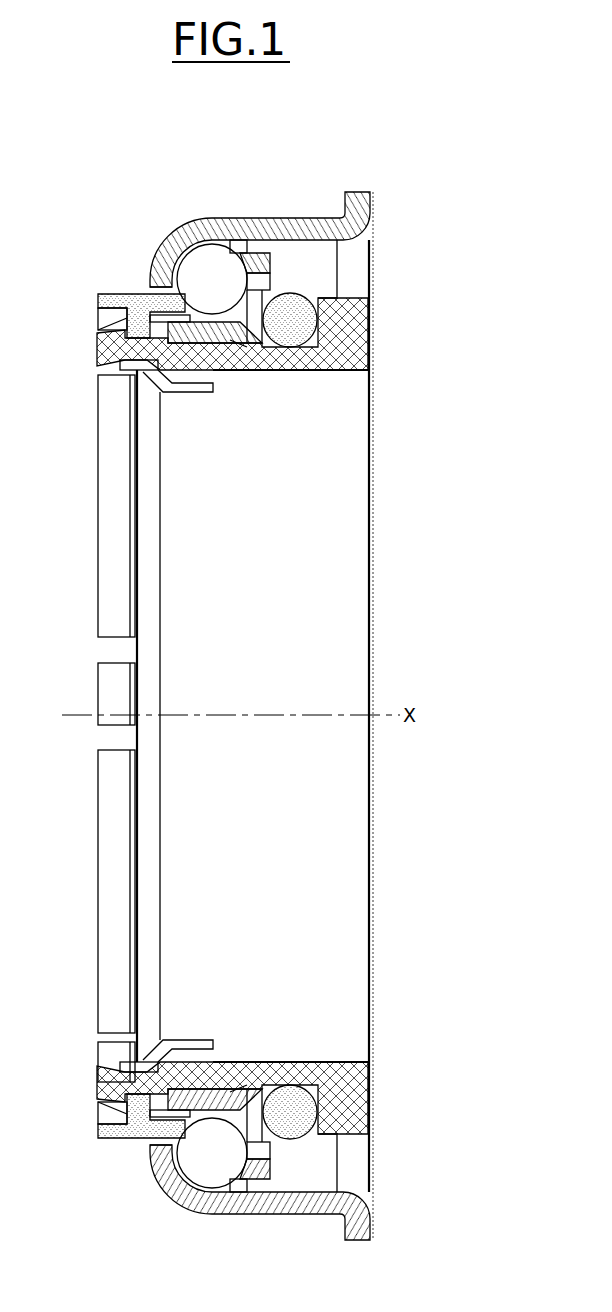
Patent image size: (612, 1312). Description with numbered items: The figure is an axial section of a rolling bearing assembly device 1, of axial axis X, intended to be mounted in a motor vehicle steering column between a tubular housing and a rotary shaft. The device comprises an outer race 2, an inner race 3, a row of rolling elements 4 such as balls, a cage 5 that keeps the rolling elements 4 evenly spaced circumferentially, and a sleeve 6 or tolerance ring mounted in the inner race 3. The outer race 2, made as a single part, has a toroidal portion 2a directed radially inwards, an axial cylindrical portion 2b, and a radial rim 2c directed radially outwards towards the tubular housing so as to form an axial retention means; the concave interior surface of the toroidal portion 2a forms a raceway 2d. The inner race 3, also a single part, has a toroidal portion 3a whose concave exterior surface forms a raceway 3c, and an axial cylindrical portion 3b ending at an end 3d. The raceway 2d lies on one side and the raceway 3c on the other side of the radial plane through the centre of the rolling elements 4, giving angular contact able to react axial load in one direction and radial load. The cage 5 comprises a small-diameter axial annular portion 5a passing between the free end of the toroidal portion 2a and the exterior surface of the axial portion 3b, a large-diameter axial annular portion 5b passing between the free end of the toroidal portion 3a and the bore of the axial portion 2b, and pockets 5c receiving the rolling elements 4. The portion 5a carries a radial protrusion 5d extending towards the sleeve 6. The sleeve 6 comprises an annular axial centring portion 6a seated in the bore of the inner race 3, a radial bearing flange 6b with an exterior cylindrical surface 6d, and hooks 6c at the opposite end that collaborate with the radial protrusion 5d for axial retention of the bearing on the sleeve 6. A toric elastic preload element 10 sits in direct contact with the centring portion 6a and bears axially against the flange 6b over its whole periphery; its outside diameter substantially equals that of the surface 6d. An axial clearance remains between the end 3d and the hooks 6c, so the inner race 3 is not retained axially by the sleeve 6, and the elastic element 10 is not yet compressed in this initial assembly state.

The rolling bearing assembly device 1 is at (428, 181).
The outer race 2 is at (260, 212).
The toroidal portion 2a is at (165, 256).
The axial portion 2b is at (322, 222).
The radial rim 2c is at (356, 203).
The raceway 2d is at (205, 262).
The inner race 3 is at (275, 288).
The toroidal portion 3a is at (266, 346).
The axial cylindrical portion 3b is at (182, 330).
The raceway 3c is at (217, 338).
The end 3d is at (125, 363).
The rolling elements 4 is at (219, 294).
The cage 5 is at (113, 286).
The axial annular portion of small diameter 5a is at (144, 292).
The axial annular portion of large diameter 5b is at (270, 272).
The pockets 5c is at (233, 250).
The radial protrusion 5d is at (124, 326).
The sleeve 6 is at (378, 347).
The annular axial centring portion 6a is at (280, 358).
The radial bearing flange 6b is at (362, 319).
The hooks 6c is at (104, 347).
The exterior cylindrical surface 6d is at (345, 304).
The elastic preload element 10 is at (302, 305).